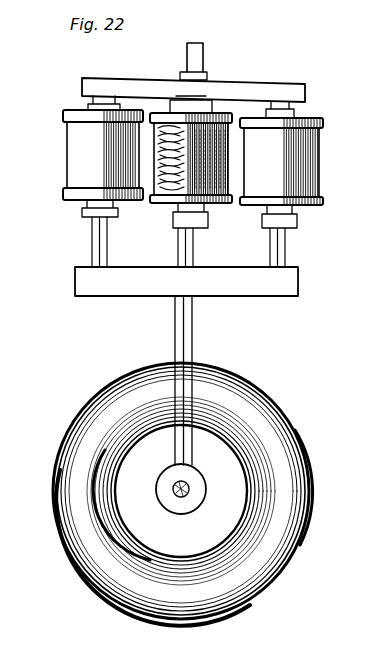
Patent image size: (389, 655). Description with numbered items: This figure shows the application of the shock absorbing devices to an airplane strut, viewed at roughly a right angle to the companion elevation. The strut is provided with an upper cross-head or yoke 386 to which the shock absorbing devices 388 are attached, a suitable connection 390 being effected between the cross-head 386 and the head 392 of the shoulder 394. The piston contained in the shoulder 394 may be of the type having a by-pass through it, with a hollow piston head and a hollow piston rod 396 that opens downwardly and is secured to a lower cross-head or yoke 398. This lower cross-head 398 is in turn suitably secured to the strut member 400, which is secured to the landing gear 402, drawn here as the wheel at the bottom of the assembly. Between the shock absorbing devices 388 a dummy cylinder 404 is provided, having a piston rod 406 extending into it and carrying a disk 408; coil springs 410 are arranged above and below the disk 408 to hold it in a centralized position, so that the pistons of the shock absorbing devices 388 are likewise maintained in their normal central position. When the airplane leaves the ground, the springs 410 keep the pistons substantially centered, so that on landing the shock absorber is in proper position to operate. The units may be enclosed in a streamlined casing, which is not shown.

The cross-head 386 is at (193, 79).
The shock absorbing devices 388 is at (67, 152).
The connection 390 is at (294, 107).
The head 392 is at (323, 123).
The shoulder 394 is at (321, 181).
The hollow piston rod 396 is at (285, 248).
The cross-head or yoke 398 is at (298, 286).
The strut member 400 is at (193, 335).
The landing gear 402 is at (196, 496).
The dummy cylinder 404 is at (167, 110).
The piston rod 406 is at (178, 252).
The disk 408 is at (232, 161).
The coil springs 410 is at (211, 112).